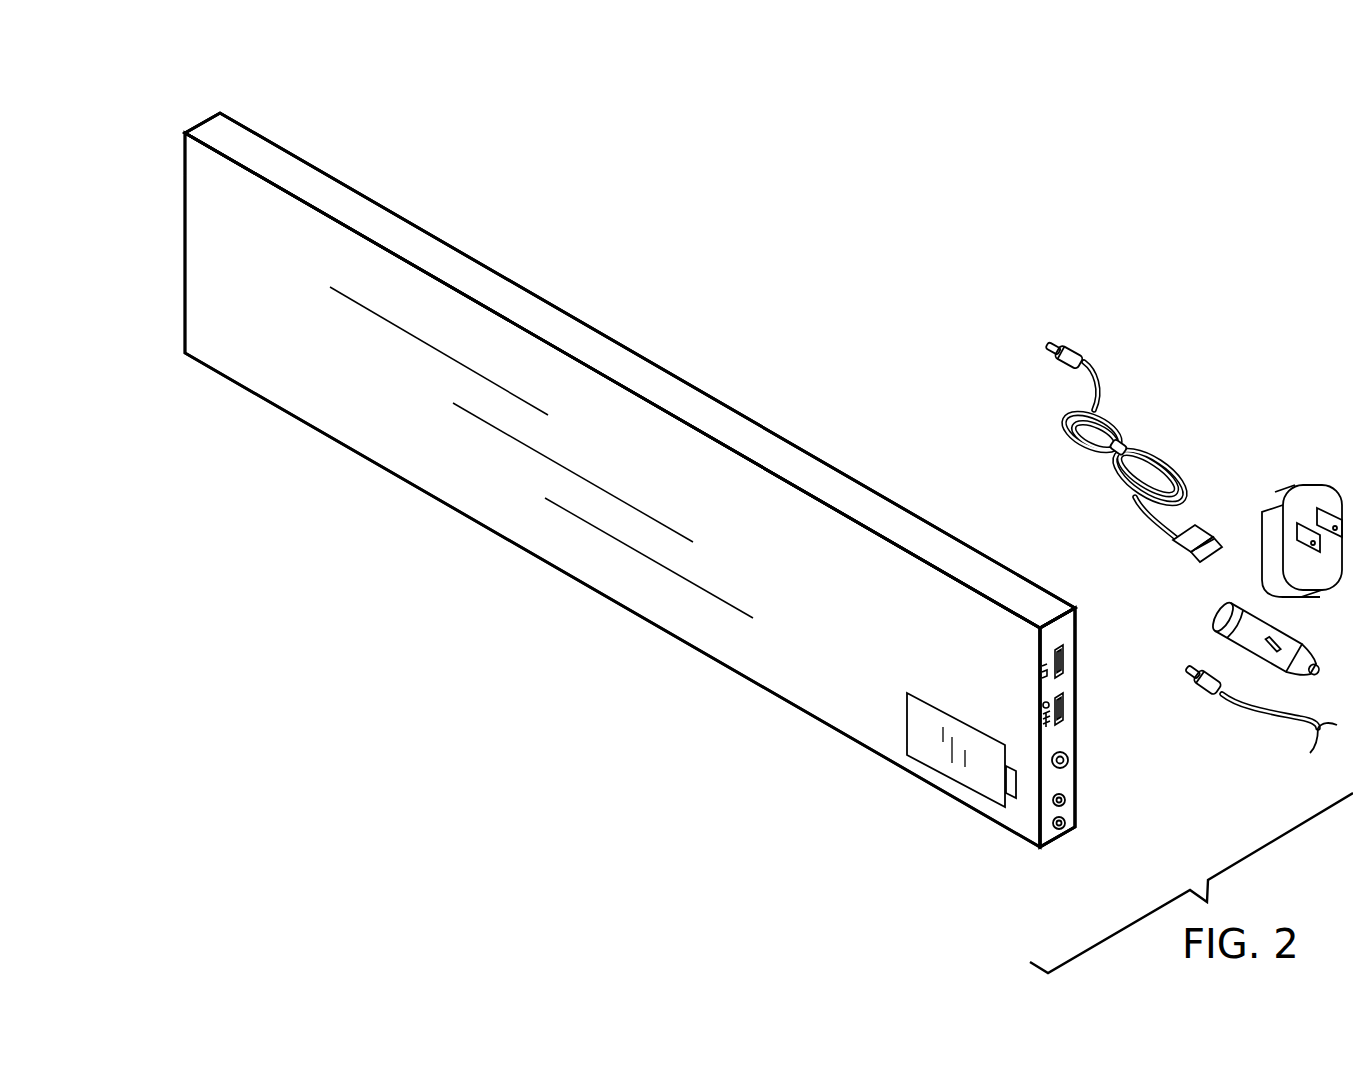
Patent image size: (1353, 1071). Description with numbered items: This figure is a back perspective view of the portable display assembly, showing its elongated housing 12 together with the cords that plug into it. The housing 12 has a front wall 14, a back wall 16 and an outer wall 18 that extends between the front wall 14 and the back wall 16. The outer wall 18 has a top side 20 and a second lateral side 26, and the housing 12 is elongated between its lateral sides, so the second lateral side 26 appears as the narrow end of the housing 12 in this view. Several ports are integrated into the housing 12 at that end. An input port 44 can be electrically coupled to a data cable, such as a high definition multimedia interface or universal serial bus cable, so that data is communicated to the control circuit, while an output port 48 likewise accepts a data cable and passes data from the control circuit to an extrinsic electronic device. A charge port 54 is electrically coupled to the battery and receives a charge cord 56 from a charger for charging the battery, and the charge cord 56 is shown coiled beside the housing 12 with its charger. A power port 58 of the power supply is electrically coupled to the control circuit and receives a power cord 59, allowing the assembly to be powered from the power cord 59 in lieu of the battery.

The housing 12 is at (220, 113).
The front wall 14 is at (1076, 630).
The back wall 16 is at (852, 707).
The outer wall 18 is at (892, 523).
The top side 20 is at (653, 387).
The second lateral side 26 is at (1065, 737).
The input port 44 is at (1063, 657).
The output port 48 is at (1065, 705).
The charge port 54 is at (1065, 800).
The power port 58 is at (1067, 765).
The charge cord 56 is at (1122, 428).
The power cord 59 is at (1270, 713).